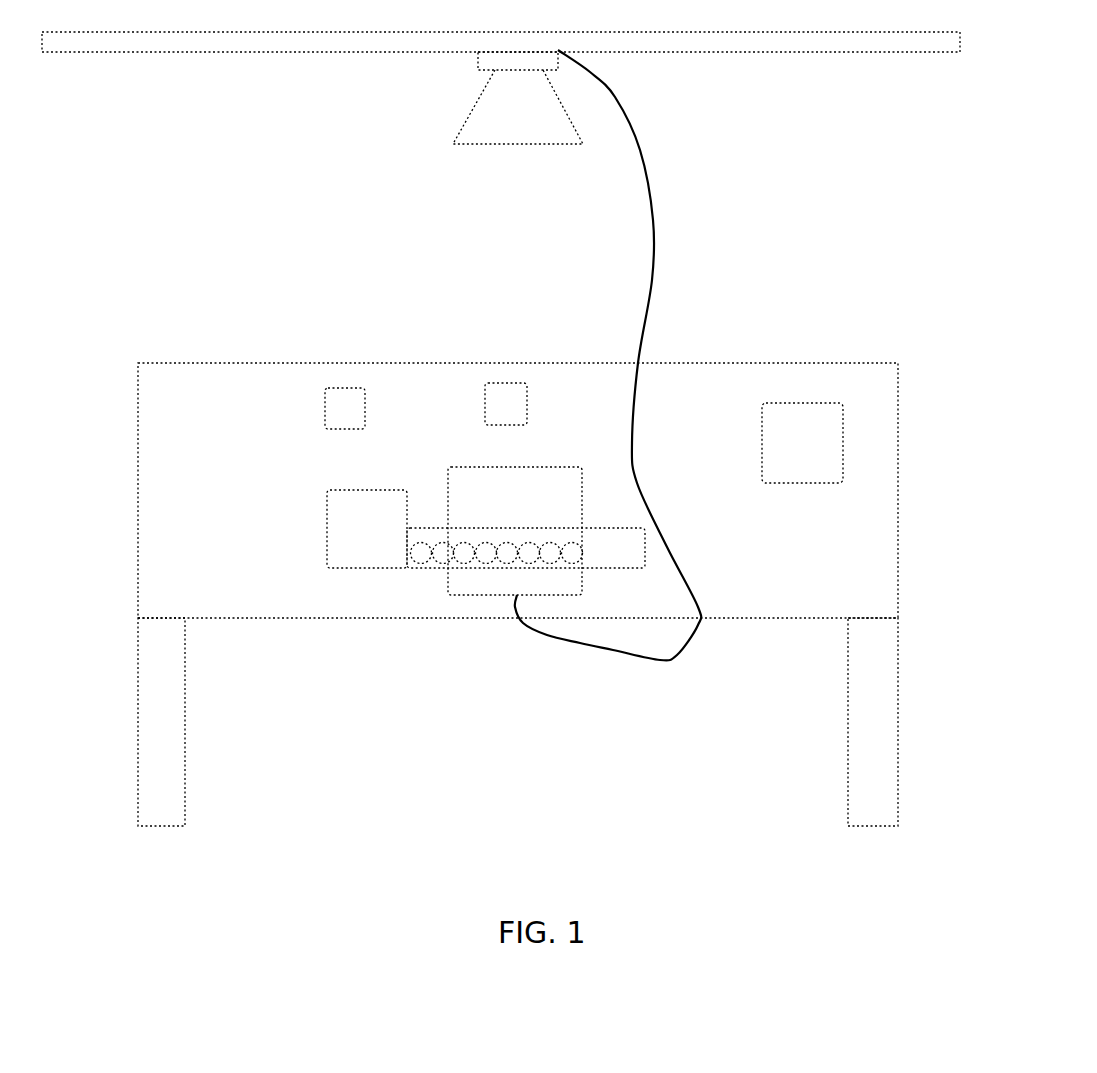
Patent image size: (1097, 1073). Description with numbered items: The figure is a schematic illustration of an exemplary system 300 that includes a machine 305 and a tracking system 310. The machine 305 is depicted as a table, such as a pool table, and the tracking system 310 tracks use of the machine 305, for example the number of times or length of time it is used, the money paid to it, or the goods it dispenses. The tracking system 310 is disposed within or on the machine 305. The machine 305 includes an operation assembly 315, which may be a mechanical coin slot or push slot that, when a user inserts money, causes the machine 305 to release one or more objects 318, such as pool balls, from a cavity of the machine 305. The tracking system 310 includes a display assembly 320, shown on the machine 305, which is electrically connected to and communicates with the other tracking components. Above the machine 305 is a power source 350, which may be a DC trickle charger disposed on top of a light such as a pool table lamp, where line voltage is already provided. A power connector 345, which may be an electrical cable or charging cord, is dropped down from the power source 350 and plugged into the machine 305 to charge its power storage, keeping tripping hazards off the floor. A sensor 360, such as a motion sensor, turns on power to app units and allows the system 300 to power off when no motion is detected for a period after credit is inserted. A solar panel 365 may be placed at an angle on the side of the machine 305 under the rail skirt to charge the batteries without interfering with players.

The system 300 is at (317, 825).
The machine 305 is at (233, 308).
The tracking system 310 is at (478, 586).
The operation assembly 315 is at (415, 488).
The object 318 is at (485, 565).
The display assembly 320 is at (834, 397).
The power connector 345 is at (675, 222).
The power source 350 is at (422, 120).
The sensor 360 is at (360, 385).
The solar panel 365 is at (522, 377).